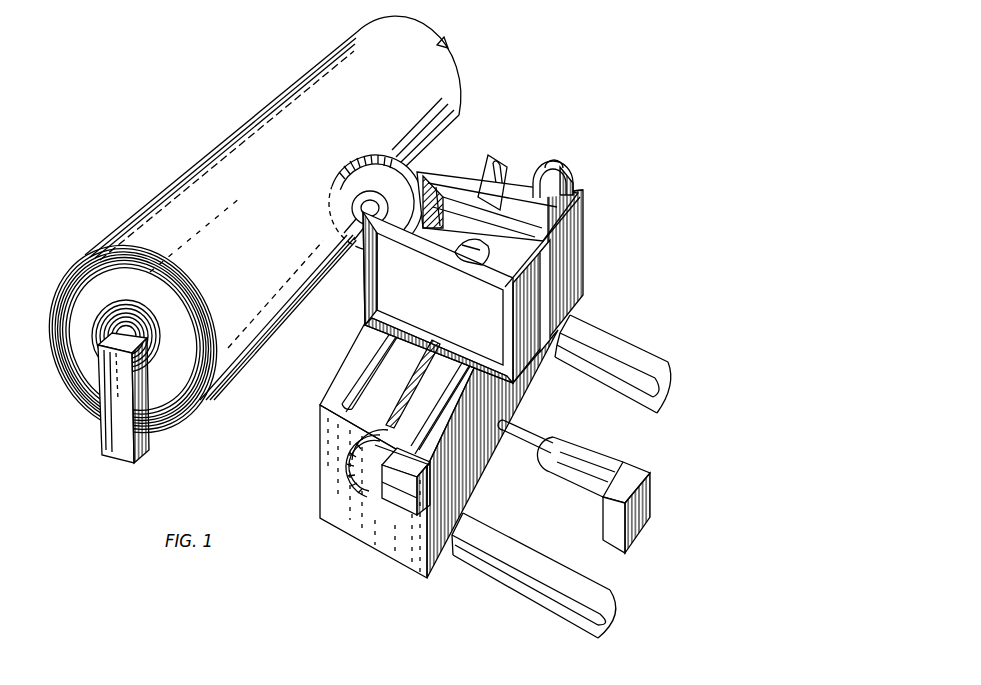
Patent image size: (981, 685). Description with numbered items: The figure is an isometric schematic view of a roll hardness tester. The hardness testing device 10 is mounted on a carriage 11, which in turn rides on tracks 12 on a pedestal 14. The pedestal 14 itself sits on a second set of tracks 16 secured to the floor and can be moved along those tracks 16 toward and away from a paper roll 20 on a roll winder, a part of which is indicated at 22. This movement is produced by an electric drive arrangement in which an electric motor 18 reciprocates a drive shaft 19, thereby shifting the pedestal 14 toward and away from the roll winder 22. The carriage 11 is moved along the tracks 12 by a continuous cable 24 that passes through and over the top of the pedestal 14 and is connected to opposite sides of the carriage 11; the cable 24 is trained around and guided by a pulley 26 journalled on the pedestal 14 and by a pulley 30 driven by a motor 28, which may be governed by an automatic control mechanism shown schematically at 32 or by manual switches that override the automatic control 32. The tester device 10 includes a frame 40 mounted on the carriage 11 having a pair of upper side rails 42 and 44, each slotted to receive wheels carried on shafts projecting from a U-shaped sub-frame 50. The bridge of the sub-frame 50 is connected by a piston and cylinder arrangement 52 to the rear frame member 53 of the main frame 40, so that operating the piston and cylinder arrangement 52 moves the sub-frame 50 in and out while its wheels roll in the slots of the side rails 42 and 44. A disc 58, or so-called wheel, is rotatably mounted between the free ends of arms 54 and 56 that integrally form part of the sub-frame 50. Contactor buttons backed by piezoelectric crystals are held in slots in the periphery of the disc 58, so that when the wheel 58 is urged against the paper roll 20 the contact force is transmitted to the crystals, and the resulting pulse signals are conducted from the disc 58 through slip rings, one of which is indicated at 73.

The hardness testing device 10 is at (423, 163).
The carriage 11 is at (520, 384).
The tracks 12 is at (500, 168).
The pedestal 14 is at (423, 450).
The tracks 16 is at (609, 338).
The electric motor 18 is at (584, 454).
The drive shaft 19 is at (519, 438).
The paper roll 20 is at (288, 97).
The roll winder 22 is at (117, 445).
The continuous cable 24 is at (548, 163).
The pulley 26 is at (573, 181).
The motor 28 is at (397, 492).
The pulley 30 is at (382, 503).
The automatic control mechanism 32 is at (410, 514).
The frame 40 is at (571, 286).
The upper side rail 42 is at (500, 205).
The upper side rail 44 is at (412, 258).
The U-shaped sub-frame 50 is at (418, 297).
The piston and cylinder arrangement 52 is at (485, 252).
The rear frame member 53 is at (540, 243).
The arm 54 is at (465, 195).
The arm 56 is at (364, 237).
The disc 58 is at (342, 184).
The slip ring 73 is at (357, 212).